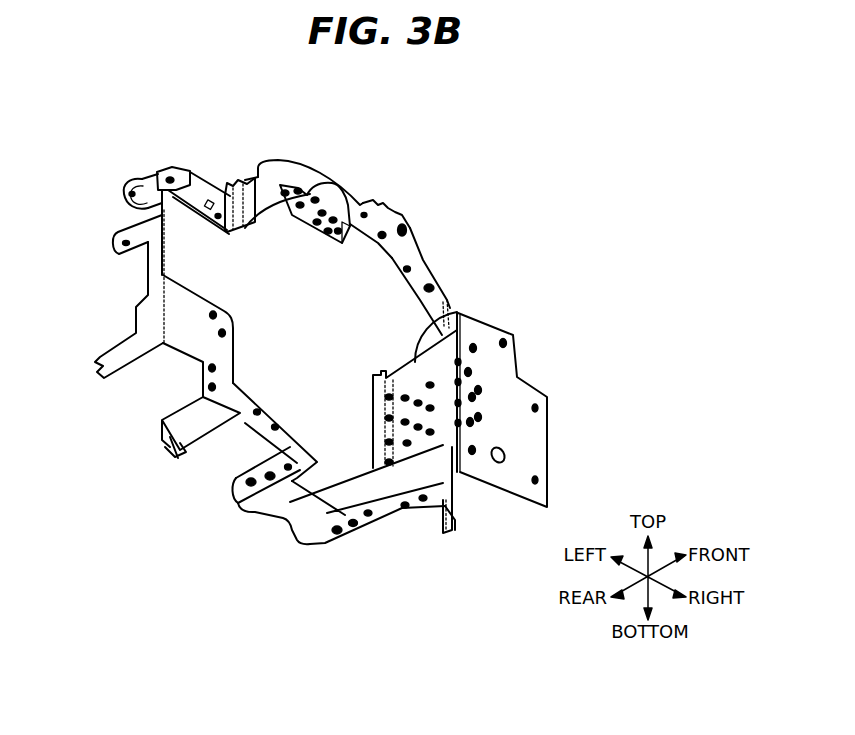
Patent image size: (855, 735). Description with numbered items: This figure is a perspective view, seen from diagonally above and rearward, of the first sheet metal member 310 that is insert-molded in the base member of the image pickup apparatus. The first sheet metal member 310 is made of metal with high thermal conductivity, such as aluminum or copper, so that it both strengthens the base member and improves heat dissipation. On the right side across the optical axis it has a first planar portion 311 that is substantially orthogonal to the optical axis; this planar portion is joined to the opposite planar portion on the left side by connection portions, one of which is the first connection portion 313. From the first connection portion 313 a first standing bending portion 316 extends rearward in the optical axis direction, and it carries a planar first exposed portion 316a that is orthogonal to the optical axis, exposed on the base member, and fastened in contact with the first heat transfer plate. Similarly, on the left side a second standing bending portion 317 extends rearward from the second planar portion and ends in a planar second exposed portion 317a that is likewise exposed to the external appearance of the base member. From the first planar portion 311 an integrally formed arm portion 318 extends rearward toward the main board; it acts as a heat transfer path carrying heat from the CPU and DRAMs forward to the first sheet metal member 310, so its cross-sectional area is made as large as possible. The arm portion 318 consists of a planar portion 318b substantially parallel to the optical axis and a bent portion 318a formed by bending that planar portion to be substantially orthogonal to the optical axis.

The first sheet metal member 310 is at (297, 156).
The first planar portion 311 is at (538, 440).
The first connection portion 313 is at (412, 226).
The first standing bending portion 316 is at (362, 214).
The first exposed portion 316a is at (316, 185).
The second standing bending portion 317 is at (190, 414).
The second exposed portion 317a is at (172, 453).
The arm portion 318 is at (413, 362).
The bent portion 318a is at (305, 495).
The planar portion 318b is at (414, 442).